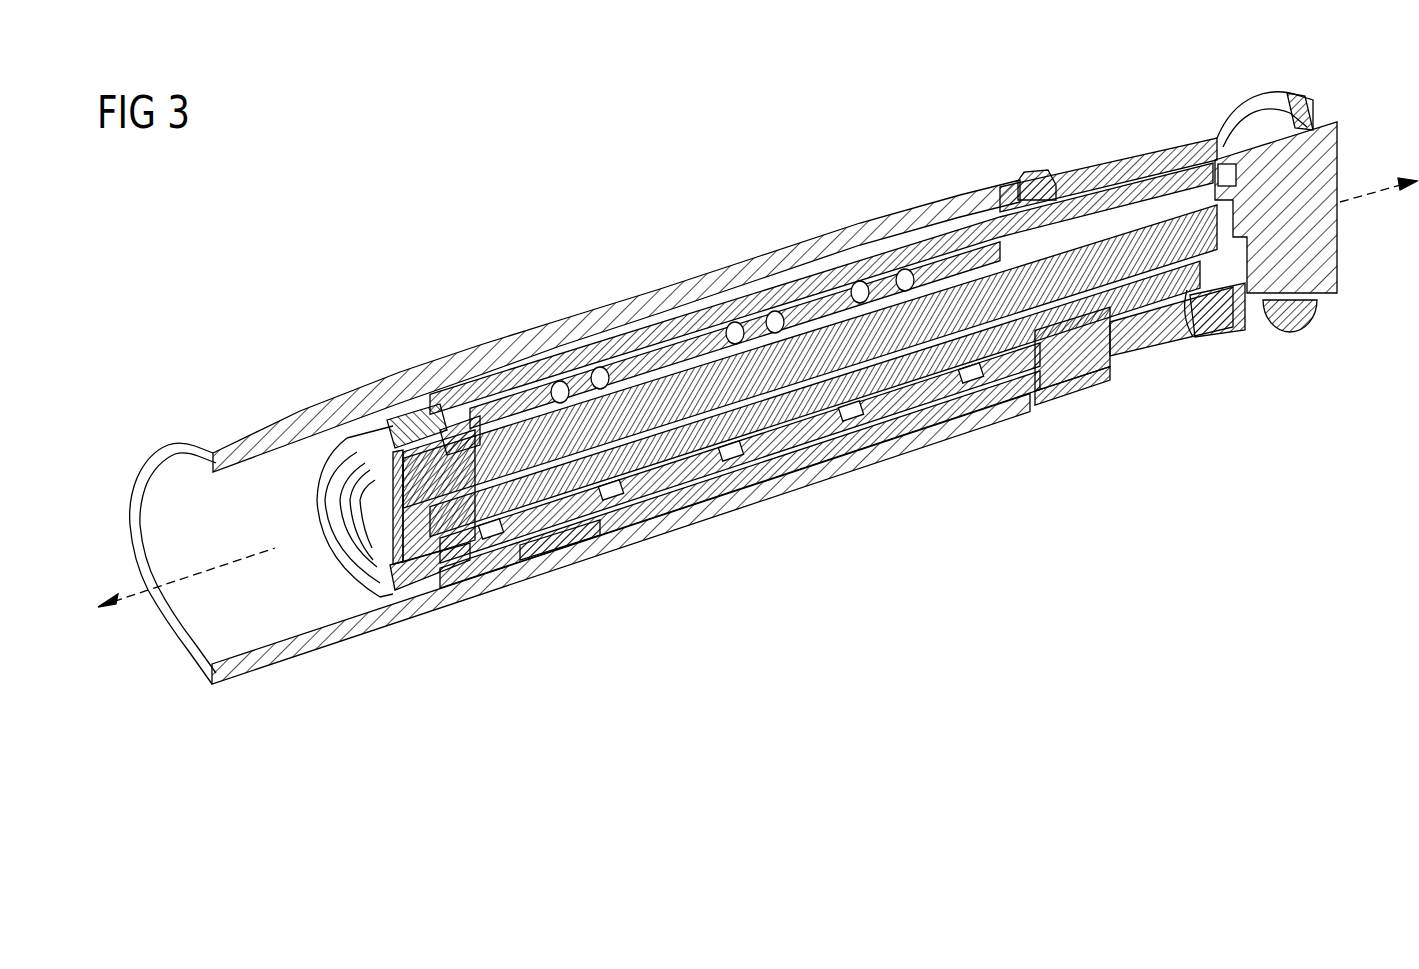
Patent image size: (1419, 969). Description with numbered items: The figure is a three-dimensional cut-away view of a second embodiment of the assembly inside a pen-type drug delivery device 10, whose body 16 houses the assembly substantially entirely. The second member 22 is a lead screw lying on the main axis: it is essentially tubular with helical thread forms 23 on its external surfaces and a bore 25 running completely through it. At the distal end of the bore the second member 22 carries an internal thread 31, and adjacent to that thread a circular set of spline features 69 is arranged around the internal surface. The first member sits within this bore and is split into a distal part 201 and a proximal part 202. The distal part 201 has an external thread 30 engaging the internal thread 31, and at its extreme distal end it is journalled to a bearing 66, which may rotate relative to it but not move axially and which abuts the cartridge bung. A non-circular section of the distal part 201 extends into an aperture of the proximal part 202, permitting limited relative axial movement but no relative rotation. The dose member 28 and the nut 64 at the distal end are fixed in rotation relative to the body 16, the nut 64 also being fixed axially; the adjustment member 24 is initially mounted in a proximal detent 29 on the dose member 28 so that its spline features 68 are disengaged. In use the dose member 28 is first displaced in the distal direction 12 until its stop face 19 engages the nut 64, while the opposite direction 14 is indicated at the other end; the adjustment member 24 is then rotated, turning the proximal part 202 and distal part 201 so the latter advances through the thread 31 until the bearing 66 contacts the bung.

The drug delivery device 10 is at (640, 250).
The distal direction 12 is at (125, 590).
The distal direction 14 is at (1378, 188).
The body 16 is at (710, 515).
The stop face 19 is at (1050, 420).
The second member 22 is at (985, 425).
The helical thread forms 23 is at (858, 268).
The adjustment member 24 is at (1337, 258).
The bore 25 is at (755, 292).
The dose member 28 is at (1075, 392).
The proximal detent 29 is at (1276, 96).
The external thread 30 is at (415, 395).
The internal thread 31 is at (462, 388).
The nut 64 is at (470, 575).
The bearing 66 is at (362, 565).
The spline features 68 is at (1238, 325).
The spline features 69 is at (525, 385).
The distal part of the first member 201 is at (548, 540).
The proximal part of the first member 202 is at (905, 440).